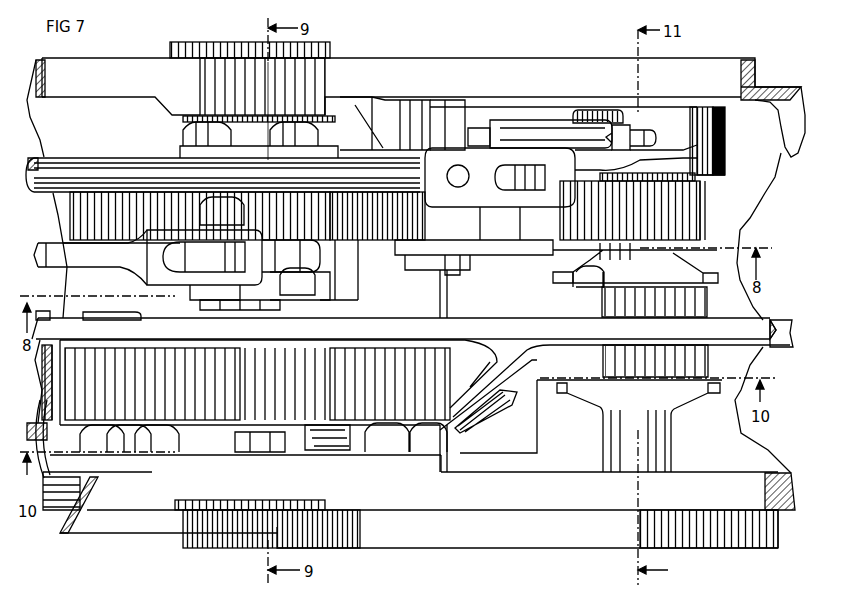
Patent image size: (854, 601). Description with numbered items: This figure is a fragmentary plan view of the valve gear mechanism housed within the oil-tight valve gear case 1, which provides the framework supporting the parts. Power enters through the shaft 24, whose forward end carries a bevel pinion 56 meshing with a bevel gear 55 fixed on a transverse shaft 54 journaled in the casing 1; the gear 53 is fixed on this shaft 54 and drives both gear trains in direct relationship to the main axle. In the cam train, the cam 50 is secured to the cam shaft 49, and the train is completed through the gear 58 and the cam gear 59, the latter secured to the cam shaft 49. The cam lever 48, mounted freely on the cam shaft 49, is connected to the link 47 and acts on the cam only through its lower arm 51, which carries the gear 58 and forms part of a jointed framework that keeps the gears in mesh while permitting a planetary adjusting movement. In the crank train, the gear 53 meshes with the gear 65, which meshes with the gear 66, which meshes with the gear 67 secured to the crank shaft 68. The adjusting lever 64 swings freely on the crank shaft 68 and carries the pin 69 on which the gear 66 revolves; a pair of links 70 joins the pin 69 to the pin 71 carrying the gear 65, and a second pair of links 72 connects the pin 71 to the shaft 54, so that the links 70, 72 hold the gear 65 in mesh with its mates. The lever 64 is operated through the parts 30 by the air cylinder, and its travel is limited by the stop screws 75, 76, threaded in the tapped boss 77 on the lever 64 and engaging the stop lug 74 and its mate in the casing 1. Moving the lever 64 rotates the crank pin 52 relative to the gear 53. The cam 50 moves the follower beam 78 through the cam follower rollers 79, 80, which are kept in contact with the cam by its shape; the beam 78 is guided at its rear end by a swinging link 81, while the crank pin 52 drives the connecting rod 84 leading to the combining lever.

The valve gear case 1 is at (781, 92).
The shaft 24 is at (46, 438).
The parts operated by the air piston 30 is at (77, 163).
The link 47 is at (127, 265).
The cam lever 48 is at (205, 267).
The cam shaft 49 is at (258, 312).
The cam 50 is at (240, 400).
The lower arm 51 is at (309, 284).
The crank pin 52 is at (701, 380).
The gear 53 is at (350, 243).
The transverse shaft 54 is at (450, 300).
The bevel gear 55 is at (482, 420).
The bevel pinion 56 is at (342, 446).
The gear 58 is at (100, 237).
The cam gear 59 is at (273, 206).
The adjusting lever 64 is at (725, 146).
The gear 65 is at (503, 207).
The gear 66 is at (675, 225).
The gear 67 is at (705, 203).
The crank shaft 68 is at (700, 177).
The pin 69 is at (592, 114).
The pair of links 70 is at (410, 137).
The pin 71 is at (455, 270).
The second pair of links 72 is at (385, 119).
The stop lug 74 is at (452, 110).
The stop screw 75 is at (643, 134).
The stop screw 76 is at (468, 136).
The tapped boss 77 is at (542, 128).
The follower beam 78 is at (760, 325).
The cam follower roller 79 is at (398, 355).
The cam follower roller 80 is at (115, 350).
The swinging link 81 is at (55, 362).
The connecting rod 84 is at (781, 344).